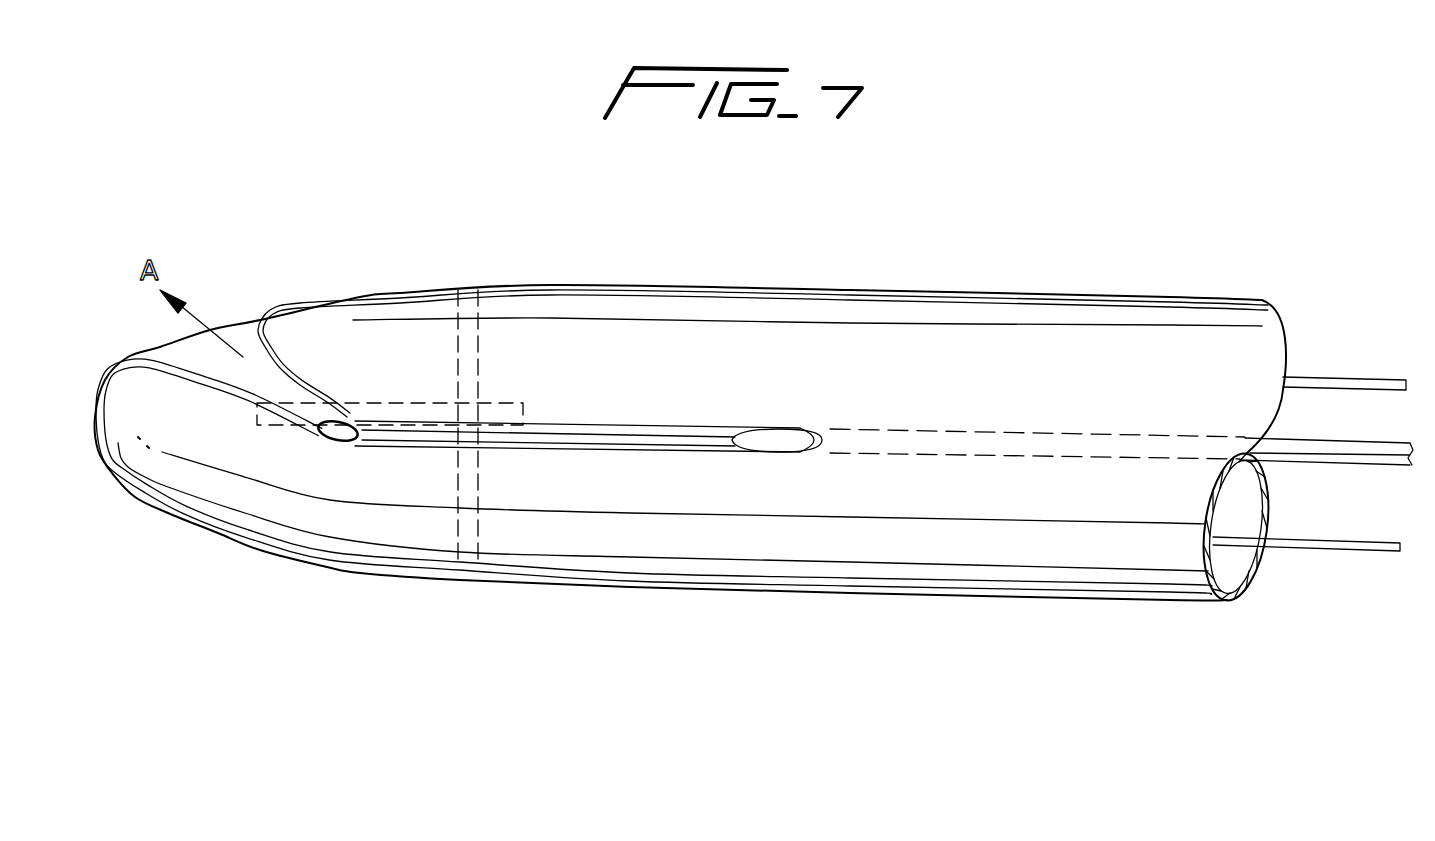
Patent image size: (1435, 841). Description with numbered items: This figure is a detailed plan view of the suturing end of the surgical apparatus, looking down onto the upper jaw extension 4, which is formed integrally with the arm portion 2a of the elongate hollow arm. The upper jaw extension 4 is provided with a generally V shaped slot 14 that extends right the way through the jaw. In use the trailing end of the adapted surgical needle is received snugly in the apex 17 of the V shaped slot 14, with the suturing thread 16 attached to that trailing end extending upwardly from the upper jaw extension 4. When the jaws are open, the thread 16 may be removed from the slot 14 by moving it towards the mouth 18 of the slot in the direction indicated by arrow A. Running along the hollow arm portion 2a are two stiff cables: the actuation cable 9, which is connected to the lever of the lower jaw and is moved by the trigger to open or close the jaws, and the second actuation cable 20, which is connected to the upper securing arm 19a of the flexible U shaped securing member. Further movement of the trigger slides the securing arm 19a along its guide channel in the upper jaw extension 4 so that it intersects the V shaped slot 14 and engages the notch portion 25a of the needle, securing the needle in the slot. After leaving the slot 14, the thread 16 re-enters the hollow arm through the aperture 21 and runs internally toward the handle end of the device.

The arm portion 2a is at (850, 287).
The upper jaw extension 4 is at (207, 527).
The actuation cable 9 is at (1333, 547).
The V shaped slot 14 is at (277, 360).
The suturing thread 16 is at (640, 450).
The apex 17 is at (340, 430).
The mouth 18 is at (160, 350).
The securing arm 19a is at (375, 403).
The second actuation cable 20 is at (1333, 382).
The aperture 21 is at (780, 453).
The notch portion 25a is at (345, 433).